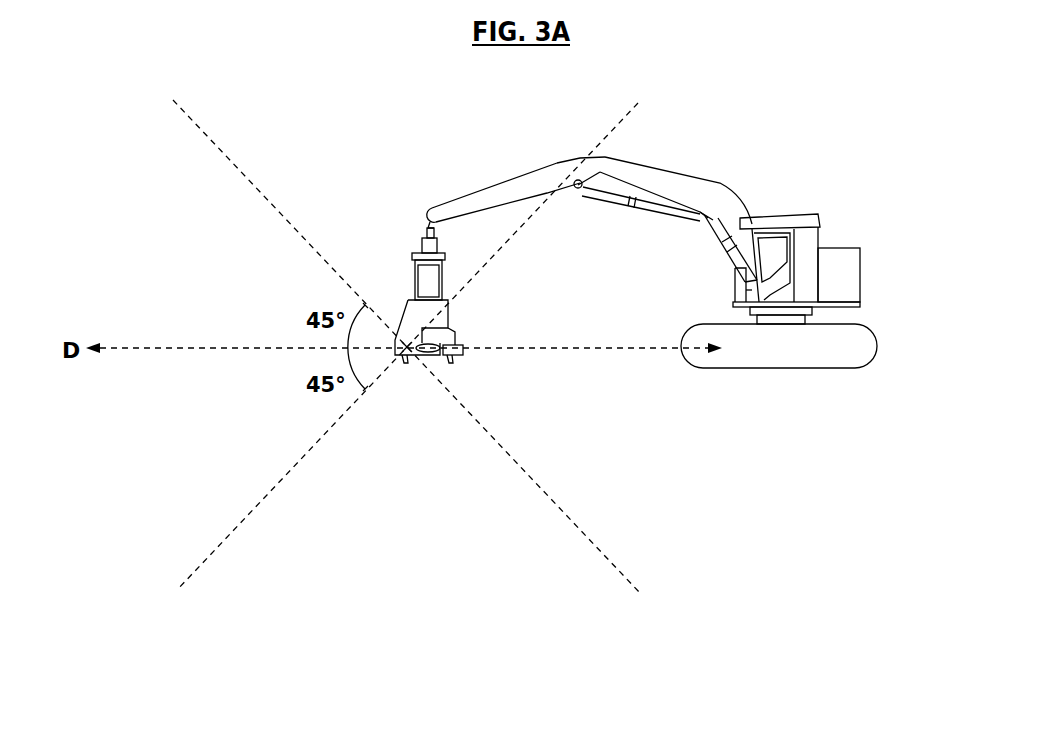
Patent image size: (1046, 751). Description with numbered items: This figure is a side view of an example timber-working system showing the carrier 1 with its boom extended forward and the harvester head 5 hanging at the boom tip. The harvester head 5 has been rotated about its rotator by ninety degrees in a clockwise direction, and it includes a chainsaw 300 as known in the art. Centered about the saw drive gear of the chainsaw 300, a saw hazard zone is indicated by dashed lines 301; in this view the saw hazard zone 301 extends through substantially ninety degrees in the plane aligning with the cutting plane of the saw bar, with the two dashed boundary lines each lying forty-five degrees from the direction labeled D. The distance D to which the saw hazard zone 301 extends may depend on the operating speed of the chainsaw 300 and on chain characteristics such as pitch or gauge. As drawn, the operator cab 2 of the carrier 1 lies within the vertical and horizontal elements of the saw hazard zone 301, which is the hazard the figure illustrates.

The carrier 1 is at (838, 142).
The operator cab 2 is at (792, 214).
The harvester head 5 is at (458, 326).
The chainsaw 300 is at (433, 362).
The saw hazard zone 301 is at (235, 166).